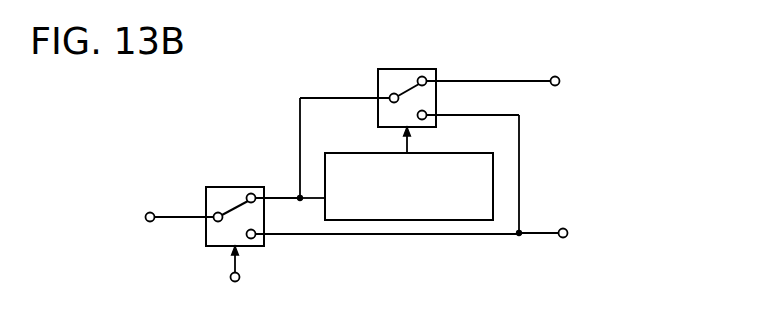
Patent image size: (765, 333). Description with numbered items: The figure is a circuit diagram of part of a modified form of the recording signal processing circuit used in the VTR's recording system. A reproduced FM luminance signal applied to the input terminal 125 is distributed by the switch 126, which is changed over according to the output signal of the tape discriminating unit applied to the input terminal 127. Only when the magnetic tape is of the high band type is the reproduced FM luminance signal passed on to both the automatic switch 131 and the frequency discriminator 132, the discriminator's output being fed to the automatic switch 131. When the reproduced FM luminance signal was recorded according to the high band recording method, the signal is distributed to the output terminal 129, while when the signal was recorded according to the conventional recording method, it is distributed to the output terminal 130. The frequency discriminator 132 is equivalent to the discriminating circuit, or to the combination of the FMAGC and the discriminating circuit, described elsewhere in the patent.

The input terminal 125 is at (151, 212).
The switch 126 is at (243, 187).
The input terminal 127 is at (240, 278).
The output terminal 129 is at (558, 76).
The output terminal 130 is at (564, 238).
The automatic switch 131 is at (424, 69).
The frequency discriminator 132 is at (493, 176).